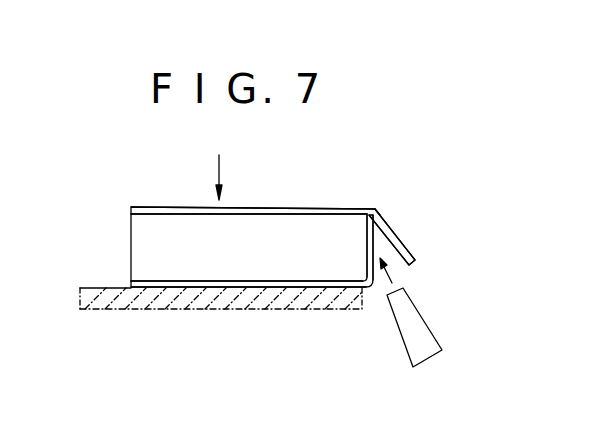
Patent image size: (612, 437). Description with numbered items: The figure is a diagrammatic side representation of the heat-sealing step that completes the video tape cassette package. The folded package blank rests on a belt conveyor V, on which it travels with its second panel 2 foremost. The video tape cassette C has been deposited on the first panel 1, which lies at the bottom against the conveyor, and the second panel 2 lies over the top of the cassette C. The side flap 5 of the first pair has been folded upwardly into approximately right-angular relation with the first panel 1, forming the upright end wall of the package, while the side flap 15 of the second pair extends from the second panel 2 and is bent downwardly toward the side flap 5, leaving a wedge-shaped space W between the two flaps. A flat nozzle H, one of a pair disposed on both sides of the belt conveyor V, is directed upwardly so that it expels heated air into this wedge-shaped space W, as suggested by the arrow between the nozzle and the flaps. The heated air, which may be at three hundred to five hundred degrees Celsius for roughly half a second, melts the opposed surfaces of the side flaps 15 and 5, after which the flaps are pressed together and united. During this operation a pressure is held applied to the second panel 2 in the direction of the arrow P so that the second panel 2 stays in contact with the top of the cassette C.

The first panel 1 is at (280, 285).
The second panel 2 is at (158, 208).
The side flap of the first pair 5 is at (367, 249).
The side flap of the second pair 15 is at (383, 246).
The flange W is at (392, 238).
The video tape cassette C is at (143, 243).
The arrow indicating pressure direction P is at (218, 166).
The belt conveyor V is at (197, 299).
The flat nozzle H is at (419, 330).